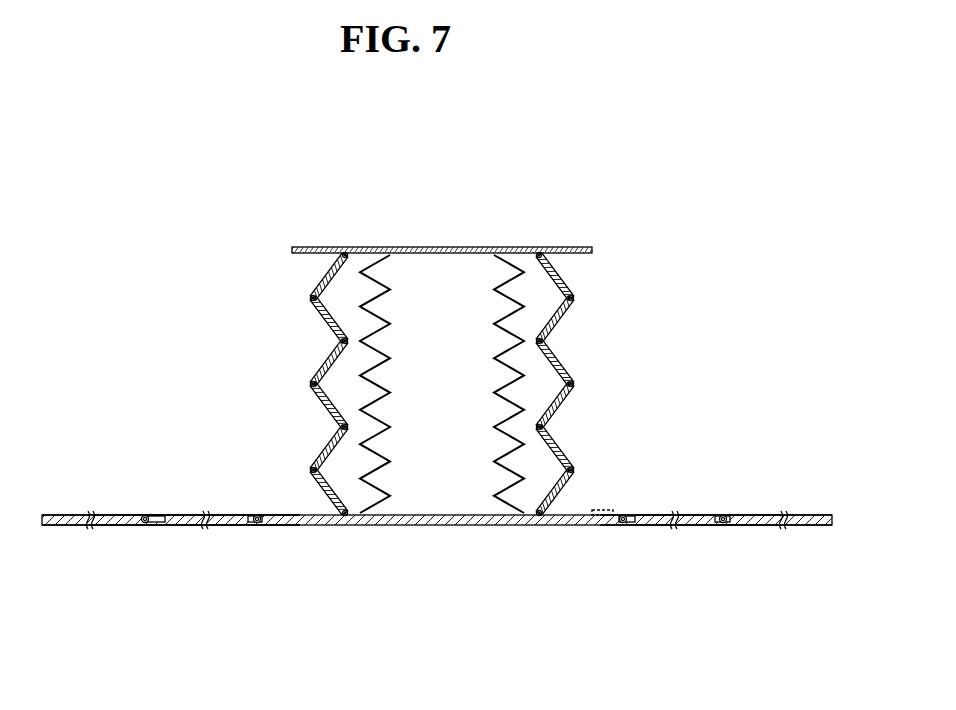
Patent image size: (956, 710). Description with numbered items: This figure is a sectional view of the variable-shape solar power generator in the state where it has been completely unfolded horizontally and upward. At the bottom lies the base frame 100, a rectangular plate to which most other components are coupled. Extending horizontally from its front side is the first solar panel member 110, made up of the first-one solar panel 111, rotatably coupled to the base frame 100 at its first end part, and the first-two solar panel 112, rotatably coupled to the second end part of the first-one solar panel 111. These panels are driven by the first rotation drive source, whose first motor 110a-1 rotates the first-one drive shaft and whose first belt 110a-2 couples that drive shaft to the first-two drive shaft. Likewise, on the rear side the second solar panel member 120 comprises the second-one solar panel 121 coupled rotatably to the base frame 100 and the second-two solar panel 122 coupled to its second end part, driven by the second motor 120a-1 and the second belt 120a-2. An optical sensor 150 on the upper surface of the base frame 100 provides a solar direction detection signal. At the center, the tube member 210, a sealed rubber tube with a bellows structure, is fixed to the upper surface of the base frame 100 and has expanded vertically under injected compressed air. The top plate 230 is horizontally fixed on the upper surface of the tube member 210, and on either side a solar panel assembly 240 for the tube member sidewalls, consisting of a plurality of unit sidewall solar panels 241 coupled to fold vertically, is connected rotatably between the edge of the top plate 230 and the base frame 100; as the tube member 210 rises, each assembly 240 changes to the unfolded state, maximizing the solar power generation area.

The base frame 100 is at (440, 527).
The first solar panel member for forming a box 110 is at (242, 622).
The 1-1 solar panel for forming a box 111 is at (223, 527).
The 1-2 solar panel for forming a box 112 is at (105, 527).
The first motor 110a-1 is at (260, 527).
The first belt 110a-2 is at (153, 514).
The second solar panel member for forming a box 120 is at (795, 622).
The 2-1 solar panel for forming a box 121 is at (653, 527).
The 2-2 solar panel for forming a box 122 is at (768, 527).
The second motor 120a-1 is at (617, 527).
The second belt 120a-2 is at (722, 512).
The optical sensor 150 is at (596, 510).
The tube member 210 is at (360, 318).
The top plate for the tube member 230 is at (372, 247).
The solar panel assembly for tube member sidewalls 240 is at (323, 358).
The solar panel for a unit sidewall 241 is at (555, 273).